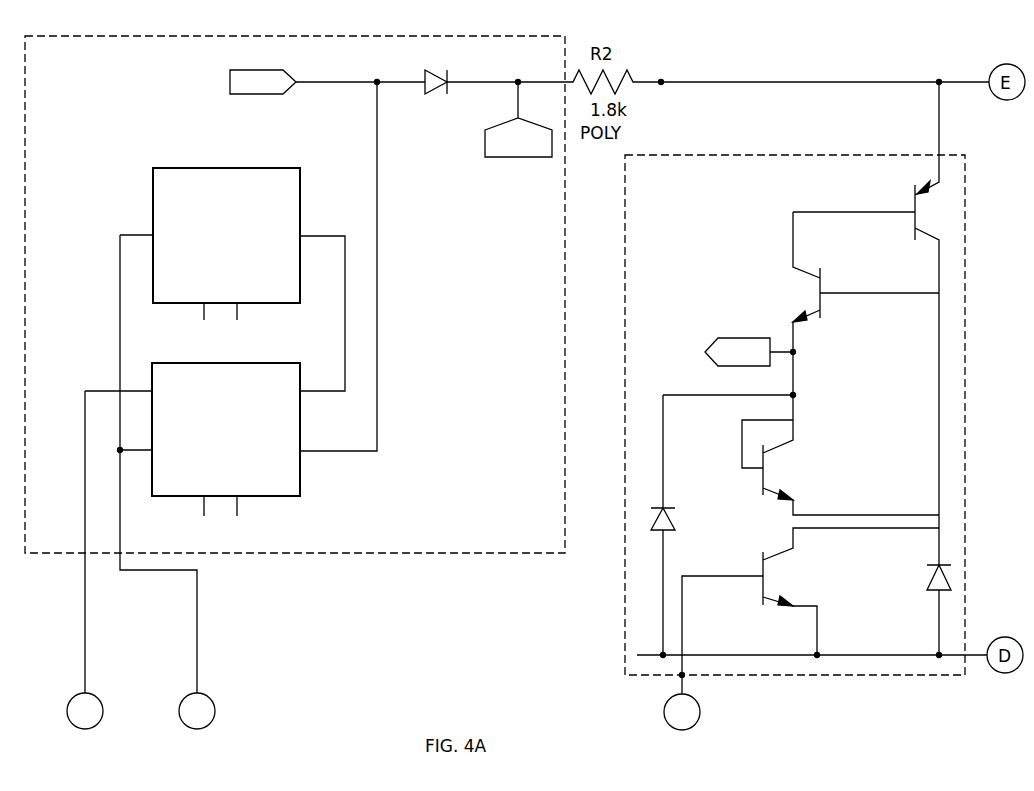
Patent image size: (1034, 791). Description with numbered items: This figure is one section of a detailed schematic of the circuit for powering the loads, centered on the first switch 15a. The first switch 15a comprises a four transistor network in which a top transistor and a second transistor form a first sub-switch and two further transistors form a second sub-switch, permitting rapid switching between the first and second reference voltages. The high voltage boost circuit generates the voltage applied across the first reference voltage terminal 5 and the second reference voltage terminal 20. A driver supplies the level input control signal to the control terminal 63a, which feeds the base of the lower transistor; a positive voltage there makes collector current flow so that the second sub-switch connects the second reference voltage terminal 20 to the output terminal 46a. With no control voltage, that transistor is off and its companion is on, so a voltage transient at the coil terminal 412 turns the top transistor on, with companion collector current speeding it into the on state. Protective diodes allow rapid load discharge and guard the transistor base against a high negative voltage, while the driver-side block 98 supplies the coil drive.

The driver circuit 98 is at (25, 282).
The coil terminal 412 is at (255, 70).
The first reference voltage terminal 5 is at (661, 80).
The first switch 15a is at (755, 155).
The output terminal 46a is at (796, 354).
The second reference voltage terminal 20 is at (661, 656).
The control terminal 63a is at (681, 677).